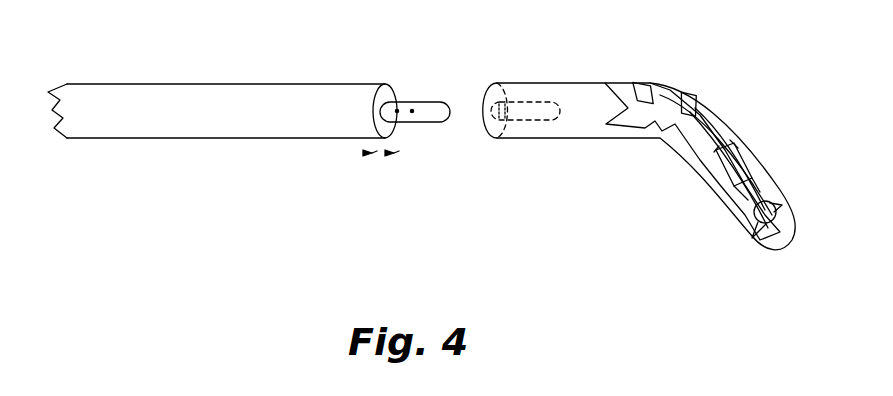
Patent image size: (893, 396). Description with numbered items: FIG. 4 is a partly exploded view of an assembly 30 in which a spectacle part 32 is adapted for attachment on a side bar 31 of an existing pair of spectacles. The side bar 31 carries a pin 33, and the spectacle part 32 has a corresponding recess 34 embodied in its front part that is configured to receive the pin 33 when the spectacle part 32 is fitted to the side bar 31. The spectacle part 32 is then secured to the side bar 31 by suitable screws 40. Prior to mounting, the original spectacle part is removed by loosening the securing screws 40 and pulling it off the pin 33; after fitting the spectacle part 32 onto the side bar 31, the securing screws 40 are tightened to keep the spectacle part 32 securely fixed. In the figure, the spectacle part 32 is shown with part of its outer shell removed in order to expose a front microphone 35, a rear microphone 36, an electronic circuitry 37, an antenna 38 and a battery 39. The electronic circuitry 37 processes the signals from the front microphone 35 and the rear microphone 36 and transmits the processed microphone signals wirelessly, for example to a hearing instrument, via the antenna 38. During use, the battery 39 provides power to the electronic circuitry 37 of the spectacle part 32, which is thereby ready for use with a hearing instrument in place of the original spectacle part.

The surgical instrument assembly 30 is at (404, 224).
The side bar 31 is at (248, 84).
The spectacle part 32 is at (551, 83).
The pin 33 is at (421, 102).
The recess 34 is at (491, 111).
The front microphone 35 is at (638, 86).
The rear microphone 36 is at (690, 95).
The electronic circuitry 37 is at (735, 156).
The antenna 38 is at (703, 110).
The battery 39 is at (758, 212).
The screws 40 is at (388, 157).